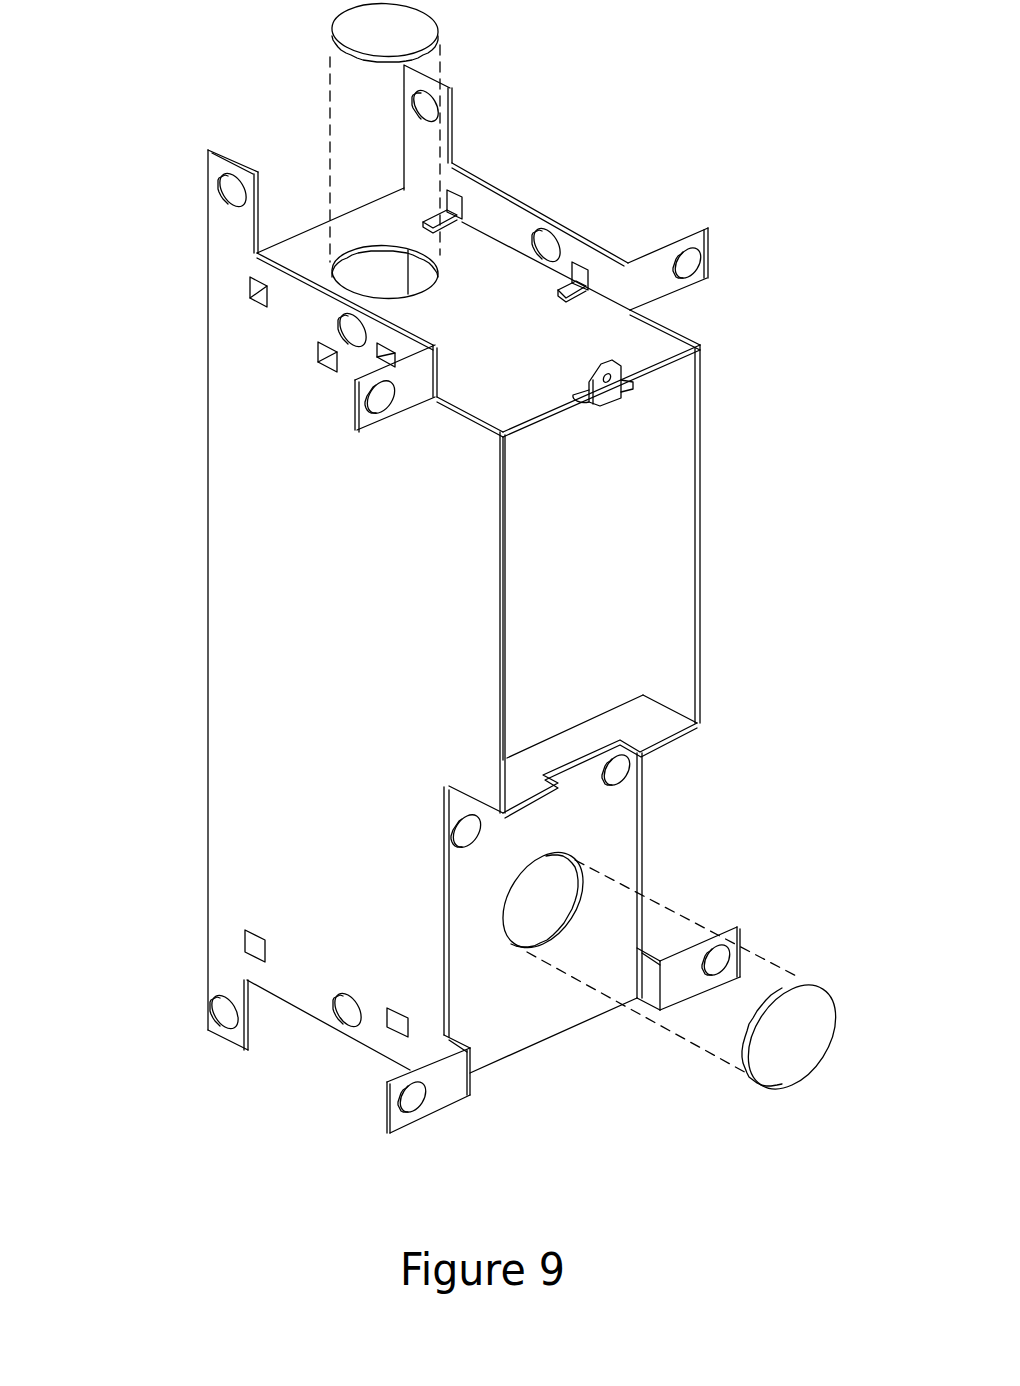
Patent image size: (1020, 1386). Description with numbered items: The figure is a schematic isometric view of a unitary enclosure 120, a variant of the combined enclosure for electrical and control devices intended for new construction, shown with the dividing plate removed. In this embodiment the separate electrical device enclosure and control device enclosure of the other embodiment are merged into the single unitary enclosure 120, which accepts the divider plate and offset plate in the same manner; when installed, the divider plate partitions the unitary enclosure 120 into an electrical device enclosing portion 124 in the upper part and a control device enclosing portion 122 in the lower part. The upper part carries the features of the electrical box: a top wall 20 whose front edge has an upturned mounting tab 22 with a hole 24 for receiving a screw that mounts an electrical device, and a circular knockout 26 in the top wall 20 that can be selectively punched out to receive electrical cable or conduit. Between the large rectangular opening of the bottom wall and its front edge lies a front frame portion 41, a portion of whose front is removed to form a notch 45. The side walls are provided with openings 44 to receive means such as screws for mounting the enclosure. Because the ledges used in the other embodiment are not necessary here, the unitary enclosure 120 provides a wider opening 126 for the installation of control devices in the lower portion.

The unitary enclosure 120 is at (178, 603).
The control device enclosing portion 122 is at (780, 878).
The electrical device enclosing portion 124 is at (765, 535).
The wider opening 126 is at (557, 692).
The top wall 20 is at (486, 300).
The upturned mounting tab 22 is at (607, 397).
The hole 24 is at (620, 364).
The circular knockout 26 is at (437, 15).
The front frame portion 41 is at (650, 722).
The openings 44 is at (548, 236).
The notch 45 is at (585, 776).